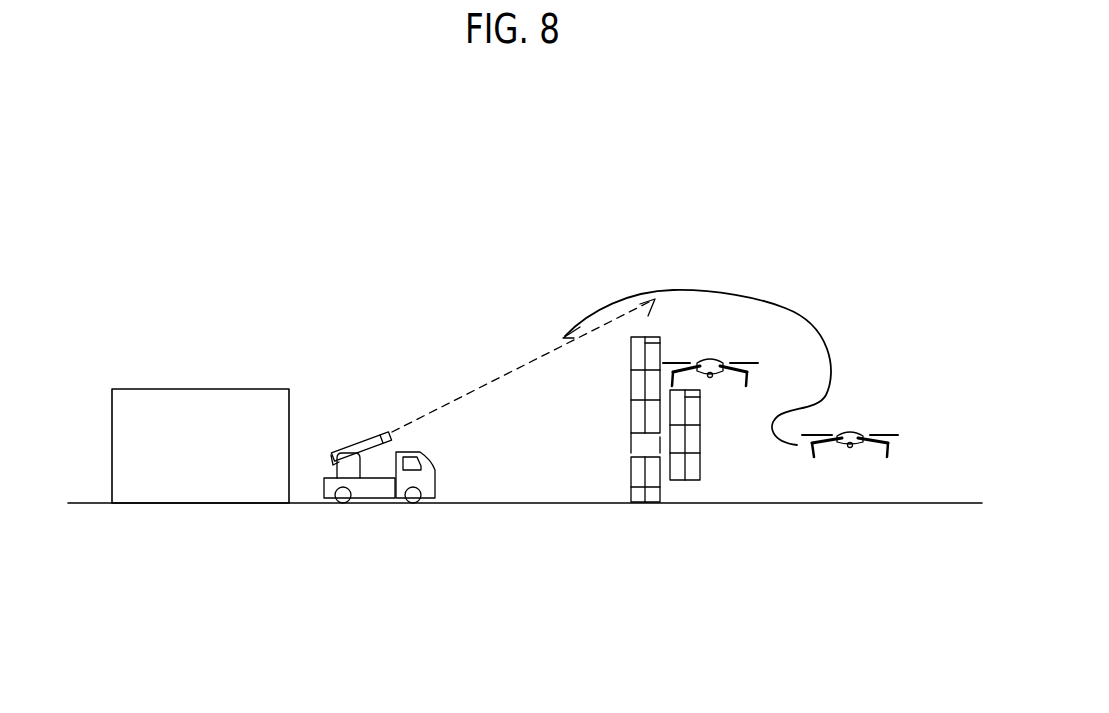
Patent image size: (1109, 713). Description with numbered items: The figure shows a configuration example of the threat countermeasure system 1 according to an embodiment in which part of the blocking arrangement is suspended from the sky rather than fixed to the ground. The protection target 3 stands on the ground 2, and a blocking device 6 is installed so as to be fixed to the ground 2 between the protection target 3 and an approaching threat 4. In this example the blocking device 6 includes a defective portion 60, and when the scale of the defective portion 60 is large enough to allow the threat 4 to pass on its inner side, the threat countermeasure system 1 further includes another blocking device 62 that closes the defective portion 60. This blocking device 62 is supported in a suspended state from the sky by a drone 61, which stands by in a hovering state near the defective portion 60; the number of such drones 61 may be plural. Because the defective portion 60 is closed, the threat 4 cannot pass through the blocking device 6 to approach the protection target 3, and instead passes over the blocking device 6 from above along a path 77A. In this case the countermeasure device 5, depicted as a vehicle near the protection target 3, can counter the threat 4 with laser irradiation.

The threat countermeasure system 1 is at (770, 130).
The ground 2 is at (927, 503).
The protection target 3 is at (197, 497).
The threat 4 is at (932, 420).
The countermeasure device 5 is at (390, 490).
The blocking device 6 is at (572, 480).
The defective portion 60 is at (537, 452).
The drone 61 is at (711, 359).
The blocking device 62 is at (697, 467).
The path 77A is at (609, 304).